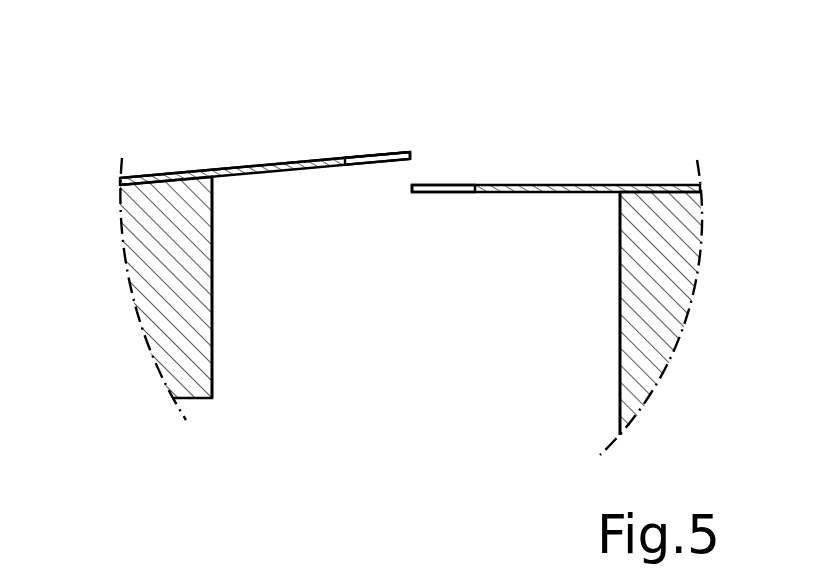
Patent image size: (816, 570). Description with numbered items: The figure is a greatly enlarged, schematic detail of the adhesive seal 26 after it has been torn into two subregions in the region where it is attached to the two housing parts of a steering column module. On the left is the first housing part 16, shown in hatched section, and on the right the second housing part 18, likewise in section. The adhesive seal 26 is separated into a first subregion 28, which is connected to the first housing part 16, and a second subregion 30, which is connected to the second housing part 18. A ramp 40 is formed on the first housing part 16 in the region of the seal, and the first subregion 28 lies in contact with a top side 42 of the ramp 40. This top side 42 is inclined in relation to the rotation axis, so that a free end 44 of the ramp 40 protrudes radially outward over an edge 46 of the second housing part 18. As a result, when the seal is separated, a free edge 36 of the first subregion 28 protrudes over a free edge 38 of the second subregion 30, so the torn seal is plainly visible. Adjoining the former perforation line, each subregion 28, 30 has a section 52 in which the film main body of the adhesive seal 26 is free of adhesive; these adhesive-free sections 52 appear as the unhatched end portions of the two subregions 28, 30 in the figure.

The first housing part 16 is at (152, 291).
The second housing part 18 is at (668, 269).
The adhesive seal 26 is at (362, 142).
The first subregion 28 is at (240, 172).
The second subregion 30 is at (560, 185).
The free edge 36 is at (413, 151).
The free edge 38 is at (410, 194).
The ramp 40 is at (145, 238).
The top side 42 is at (162, 182).
The free end 44 is at (212, 182).
The edge 46 is at (618, 195).
The section 52 is at (365, 182).